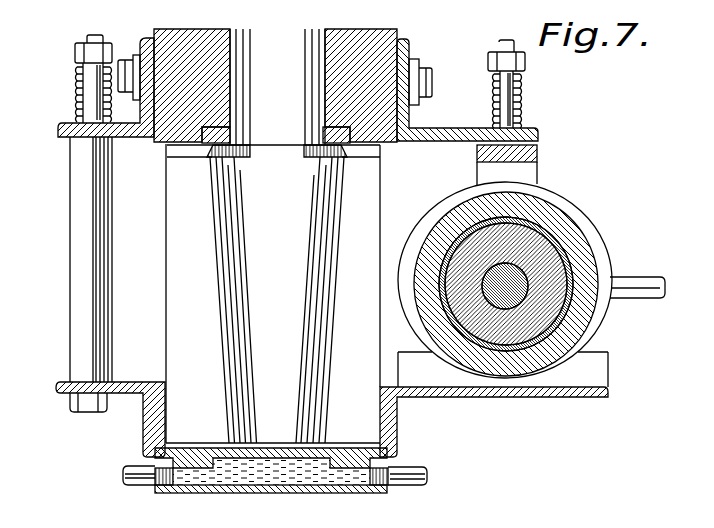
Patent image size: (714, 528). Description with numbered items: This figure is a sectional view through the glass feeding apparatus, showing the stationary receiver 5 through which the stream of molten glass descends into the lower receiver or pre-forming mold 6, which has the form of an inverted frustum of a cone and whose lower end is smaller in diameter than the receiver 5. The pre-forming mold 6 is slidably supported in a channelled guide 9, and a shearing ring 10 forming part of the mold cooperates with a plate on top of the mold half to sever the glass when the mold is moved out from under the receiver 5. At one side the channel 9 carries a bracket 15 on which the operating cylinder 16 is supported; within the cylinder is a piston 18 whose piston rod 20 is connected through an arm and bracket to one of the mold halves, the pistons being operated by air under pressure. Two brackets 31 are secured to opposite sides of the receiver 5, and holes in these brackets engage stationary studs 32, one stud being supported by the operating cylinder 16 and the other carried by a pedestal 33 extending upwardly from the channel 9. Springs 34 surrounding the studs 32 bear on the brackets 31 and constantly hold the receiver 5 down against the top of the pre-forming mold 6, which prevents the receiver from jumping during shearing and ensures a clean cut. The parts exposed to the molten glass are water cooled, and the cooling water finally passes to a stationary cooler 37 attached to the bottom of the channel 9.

The stationary receiver 5 is at (197, 36).
The pre-forming mold 6 is at (277, 294).
The channelled guide 9 is at (147, 428).
The shearing ring 10 is at (213, 133).
The bracket 15 is at (497, 398).
The operating cylinder 16 is at (583, 250).
The piston 18 is at (545, 242).
The piston rod 20 is at (524, 299).
The brackets 31 is at (147, 136).
The studs 32 is at (92, 83).
The pedestal 33 is at (78, 253).
The springs 34 is at (80, 103).
The stationary cooler 37 is at (282, 493).